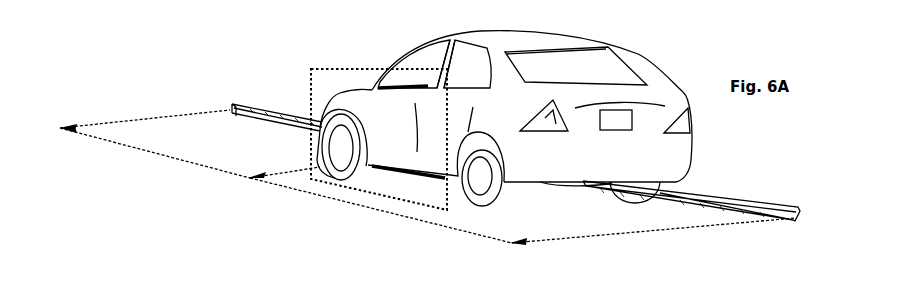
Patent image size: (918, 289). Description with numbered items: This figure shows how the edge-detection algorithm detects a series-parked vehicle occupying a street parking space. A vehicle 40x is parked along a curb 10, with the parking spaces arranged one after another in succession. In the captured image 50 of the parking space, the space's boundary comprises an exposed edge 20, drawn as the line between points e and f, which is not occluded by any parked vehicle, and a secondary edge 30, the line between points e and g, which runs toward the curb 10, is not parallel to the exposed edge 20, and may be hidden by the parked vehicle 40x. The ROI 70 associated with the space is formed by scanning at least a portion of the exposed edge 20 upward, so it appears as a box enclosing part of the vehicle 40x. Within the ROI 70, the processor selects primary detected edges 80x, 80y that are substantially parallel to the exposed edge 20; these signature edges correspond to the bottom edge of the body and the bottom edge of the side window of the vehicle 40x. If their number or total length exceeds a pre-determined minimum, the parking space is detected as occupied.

The curb 10 is at (744, 195).
The exposed edge 20 is at (337, 203).
The secondary edge 30 is at (626, 233).
The vehicle 40x is at (556, 63).
The image 50 is at (462, 224).
The ROI 70 is at (447, 80).
The primary detected edge 80x is at (424, 175).
The primary detected edge 80y is at (403, 89).